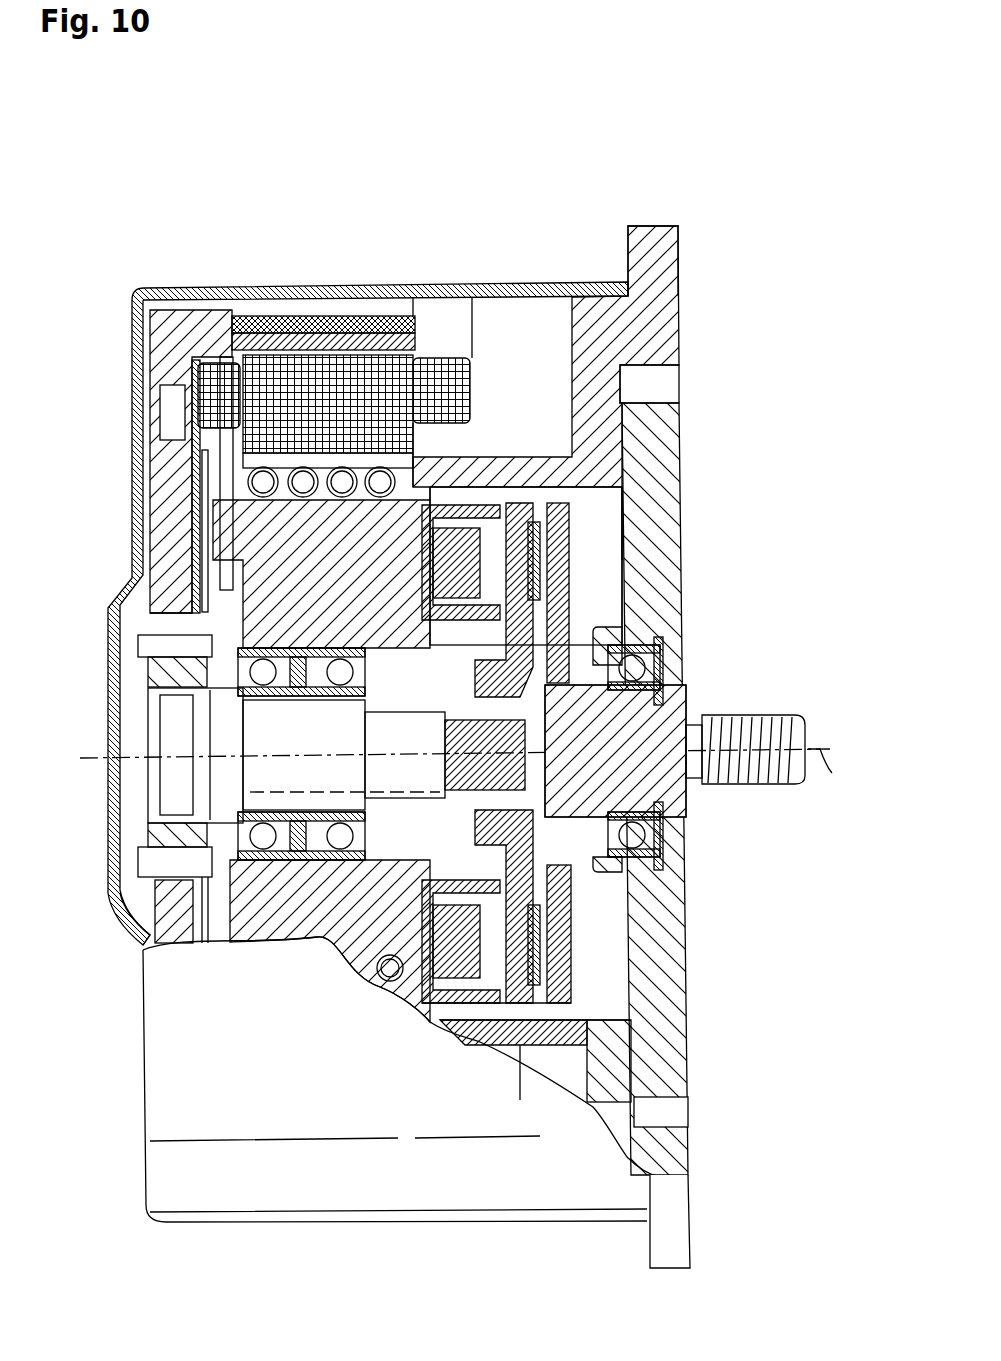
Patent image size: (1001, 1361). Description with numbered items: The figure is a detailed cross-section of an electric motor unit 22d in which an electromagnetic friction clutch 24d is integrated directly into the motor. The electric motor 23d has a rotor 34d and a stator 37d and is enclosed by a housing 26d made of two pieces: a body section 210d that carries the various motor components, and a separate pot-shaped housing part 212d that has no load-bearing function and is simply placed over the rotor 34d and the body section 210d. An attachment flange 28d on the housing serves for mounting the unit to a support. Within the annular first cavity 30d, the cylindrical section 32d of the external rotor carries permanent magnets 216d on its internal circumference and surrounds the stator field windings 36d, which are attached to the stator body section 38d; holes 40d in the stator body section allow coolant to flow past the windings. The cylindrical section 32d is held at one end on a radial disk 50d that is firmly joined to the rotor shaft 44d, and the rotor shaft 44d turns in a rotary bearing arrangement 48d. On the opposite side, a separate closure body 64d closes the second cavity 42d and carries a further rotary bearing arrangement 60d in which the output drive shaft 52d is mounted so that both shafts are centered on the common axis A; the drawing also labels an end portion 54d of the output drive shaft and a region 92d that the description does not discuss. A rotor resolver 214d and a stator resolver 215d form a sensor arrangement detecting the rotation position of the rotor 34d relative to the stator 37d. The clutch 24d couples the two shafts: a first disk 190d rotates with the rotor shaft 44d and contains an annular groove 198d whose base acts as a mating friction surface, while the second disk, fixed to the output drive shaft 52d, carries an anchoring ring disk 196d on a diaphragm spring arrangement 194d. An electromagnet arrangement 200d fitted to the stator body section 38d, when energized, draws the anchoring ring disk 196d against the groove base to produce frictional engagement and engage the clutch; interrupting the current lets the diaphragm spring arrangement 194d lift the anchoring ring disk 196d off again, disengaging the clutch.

The electric motor unit 22d is at (528, 142).
The electric motor 23d is at (420, 357).
The electromagnetic friction clutch 24d is at (590, 593).
The housing 26d is at (645, 343).
The attachment flange 28d is at (652, 249).
The annular first cavity 30d is at (532, 333).
The cylindrical section 32d is at (380, 388).
The rotor 34d is at (158, 925).
The stator field windings 36d is at (440, 343).
The stator 37d is at (177, 490).
The stator body section 38d is at (273, 918).
The holes 40d is at (160, 440).
The second cavity 42d is at (607, 998).
The rotor shaft 44d is at (230, 722).
The rotary bearing arrangement 48d is at (217, 802).
The disk 50d is at (240, 497).
The output drive shaft 52d is at (655, 725).
The threaded output shaft 54d is at (785, 725).
The rotary bearing arrangement 60d is at (648, 834).
The closure body 64d is at (650, 546).
The gap 92d is at (585, 937).
The first disk 190d is at (331, 945).
The diaphragm spring arrangement 194d is at (600, 565).
The anchoring ring disk 196d is at (520, 1003).
The annular groove 198d is at (635, 500).
The electromagnet arrangement 200d is at (462, 510).
The body section 210d is at (637, 313).
The pot-shaped housing part 212d is at (220, 293).
The rotor resolver 214d is at (193, 535).
The stator resolver 215d is at (200, 575).
The permanent magnets 216d is at (303, 318).
The axis A is at (832, 770).